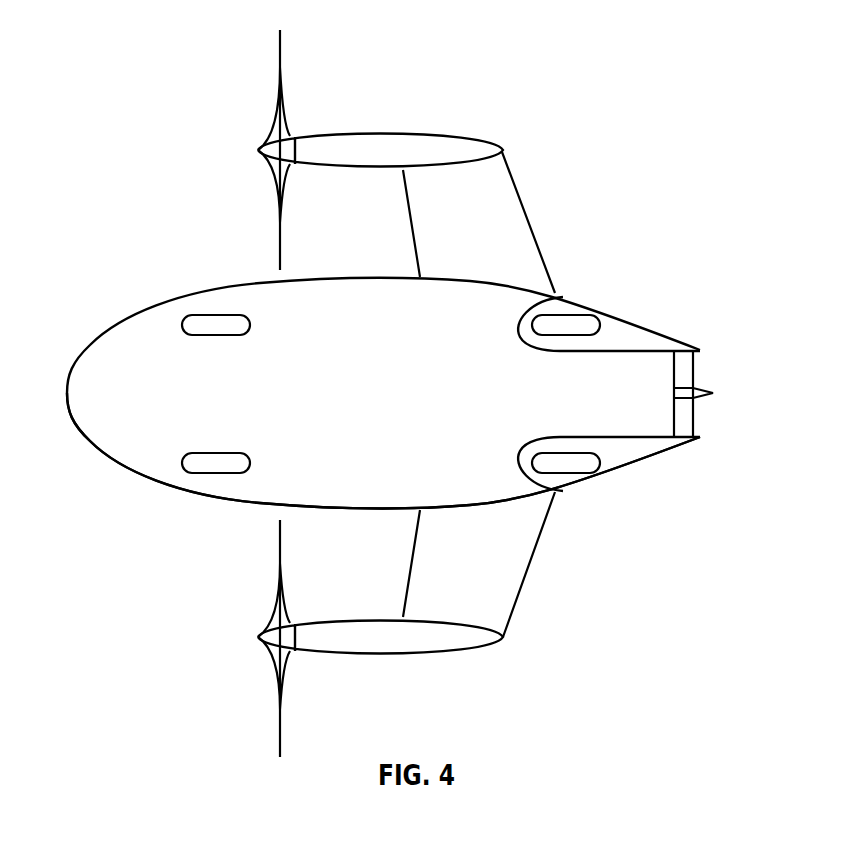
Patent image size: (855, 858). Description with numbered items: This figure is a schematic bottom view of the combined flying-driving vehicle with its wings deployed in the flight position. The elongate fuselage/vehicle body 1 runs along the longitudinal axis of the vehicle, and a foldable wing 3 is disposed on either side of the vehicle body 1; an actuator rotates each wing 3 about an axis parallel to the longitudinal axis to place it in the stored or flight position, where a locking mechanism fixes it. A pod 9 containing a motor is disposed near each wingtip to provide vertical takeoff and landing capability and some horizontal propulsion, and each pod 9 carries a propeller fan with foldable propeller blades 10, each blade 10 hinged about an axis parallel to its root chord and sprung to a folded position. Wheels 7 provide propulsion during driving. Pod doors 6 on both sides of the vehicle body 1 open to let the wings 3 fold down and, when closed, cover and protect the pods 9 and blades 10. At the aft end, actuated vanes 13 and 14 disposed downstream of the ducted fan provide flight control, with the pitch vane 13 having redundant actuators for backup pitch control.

The fuselage/vehicle body 1 is at (90, 422).
The foldable wing 3 is at (507, 200).
The pod door 6 is at (283, 490).
The wheel 7 is at (600, 462).
The pod 9 is at (328, 140).
The propeller blade 10 is at (285, 680).
The pitch vane 13 is at (685, 375).
The actuated vane 14 is at (713, 393).